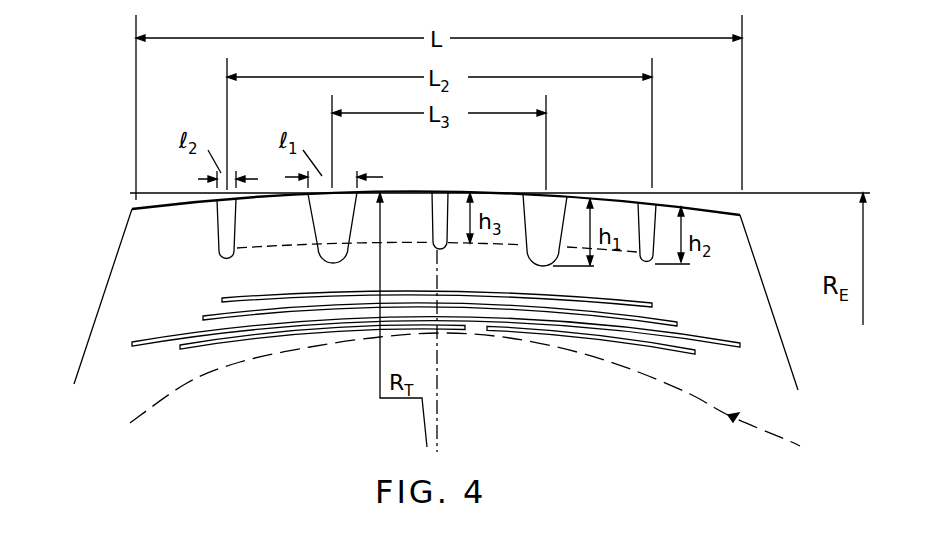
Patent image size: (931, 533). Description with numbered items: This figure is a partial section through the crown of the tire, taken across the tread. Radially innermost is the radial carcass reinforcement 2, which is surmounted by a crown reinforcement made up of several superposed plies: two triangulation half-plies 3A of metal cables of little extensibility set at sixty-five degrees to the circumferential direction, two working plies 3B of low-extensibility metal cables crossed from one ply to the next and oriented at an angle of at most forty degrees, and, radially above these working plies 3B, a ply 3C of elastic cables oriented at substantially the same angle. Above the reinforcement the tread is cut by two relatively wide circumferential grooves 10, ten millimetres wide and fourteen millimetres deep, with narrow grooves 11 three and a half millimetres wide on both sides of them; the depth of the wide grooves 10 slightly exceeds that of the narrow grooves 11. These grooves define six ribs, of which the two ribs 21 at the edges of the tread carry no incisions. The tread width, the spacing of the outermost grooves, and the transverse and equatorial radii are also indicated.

The radial carcass reinforcement 2 is at (786, 441).
The triangulation half-plies 3A is at (180, 347).
The working plies 3B is at (132, 343).
The ply of elastic cables 3C is at (222, 300).
The wide circumferential grooves 10 is at (555, 205).
The narrow grooves 11 is at (440, 238).
The edge ribs 21 is at (123, 273).